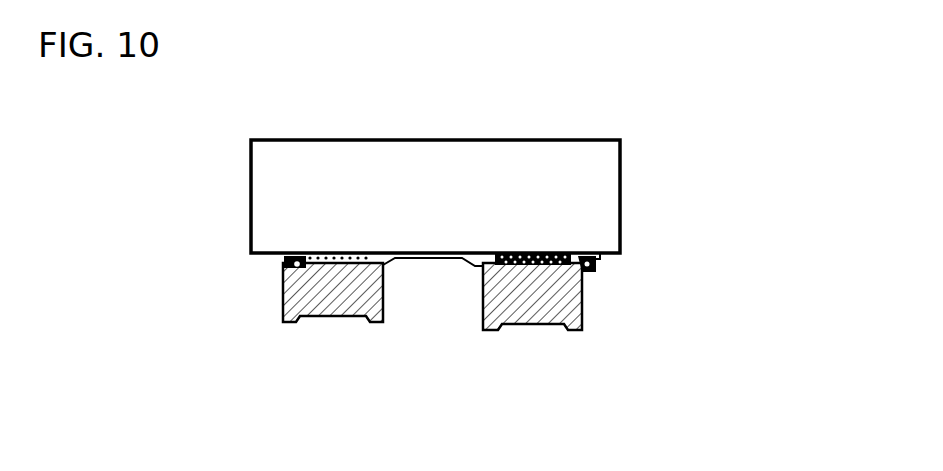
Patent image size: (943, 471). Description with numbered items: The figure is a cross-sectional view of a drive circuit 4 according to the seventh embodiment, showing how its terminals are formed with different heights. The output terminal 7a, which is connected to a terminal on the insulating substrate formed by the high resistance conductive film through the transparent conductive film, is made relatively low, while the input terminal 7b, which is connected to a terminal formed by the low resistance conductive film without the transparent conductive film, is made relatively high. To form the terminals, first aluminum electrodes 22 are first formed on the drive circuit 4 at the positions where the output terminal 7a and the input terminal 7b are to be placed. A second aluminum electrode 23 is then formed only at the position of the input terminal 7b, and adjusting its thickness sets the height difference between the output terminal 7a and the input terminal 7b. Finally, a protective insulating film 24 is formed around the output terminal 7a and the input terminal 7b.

The drive circuit 4 is at (600, 185).
The output terminal 7a is at (332, 283).
The input terminal 7b is at (535, 297).
The first aluminum electrode 22 is at (284, 266).
The second aluminum electrode 23 is at (483, 302).
The protective insulating film 24 is at (587, 276).